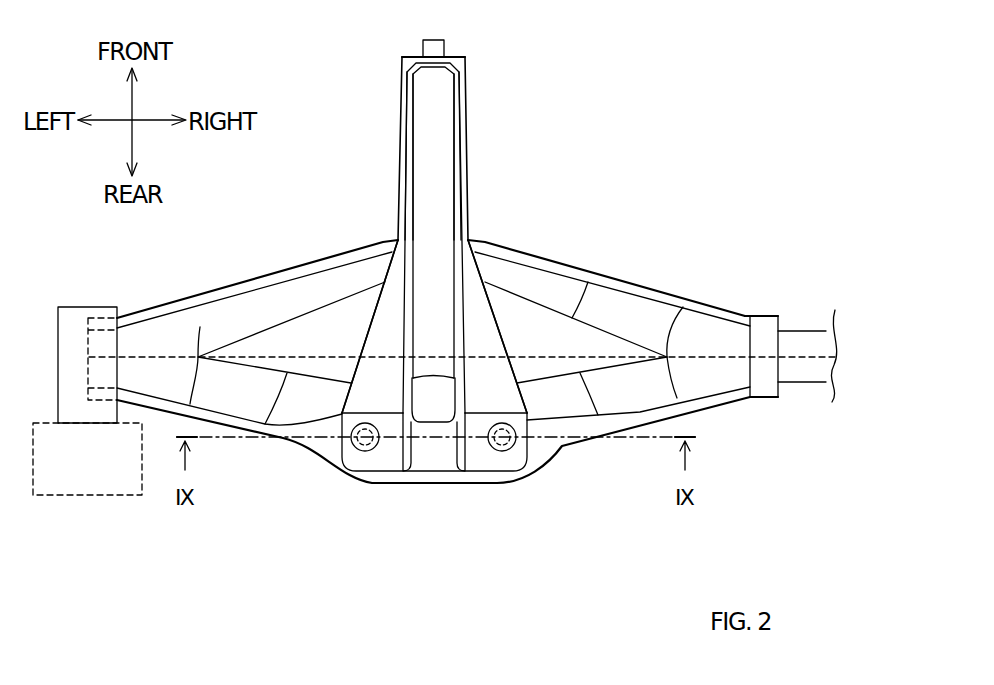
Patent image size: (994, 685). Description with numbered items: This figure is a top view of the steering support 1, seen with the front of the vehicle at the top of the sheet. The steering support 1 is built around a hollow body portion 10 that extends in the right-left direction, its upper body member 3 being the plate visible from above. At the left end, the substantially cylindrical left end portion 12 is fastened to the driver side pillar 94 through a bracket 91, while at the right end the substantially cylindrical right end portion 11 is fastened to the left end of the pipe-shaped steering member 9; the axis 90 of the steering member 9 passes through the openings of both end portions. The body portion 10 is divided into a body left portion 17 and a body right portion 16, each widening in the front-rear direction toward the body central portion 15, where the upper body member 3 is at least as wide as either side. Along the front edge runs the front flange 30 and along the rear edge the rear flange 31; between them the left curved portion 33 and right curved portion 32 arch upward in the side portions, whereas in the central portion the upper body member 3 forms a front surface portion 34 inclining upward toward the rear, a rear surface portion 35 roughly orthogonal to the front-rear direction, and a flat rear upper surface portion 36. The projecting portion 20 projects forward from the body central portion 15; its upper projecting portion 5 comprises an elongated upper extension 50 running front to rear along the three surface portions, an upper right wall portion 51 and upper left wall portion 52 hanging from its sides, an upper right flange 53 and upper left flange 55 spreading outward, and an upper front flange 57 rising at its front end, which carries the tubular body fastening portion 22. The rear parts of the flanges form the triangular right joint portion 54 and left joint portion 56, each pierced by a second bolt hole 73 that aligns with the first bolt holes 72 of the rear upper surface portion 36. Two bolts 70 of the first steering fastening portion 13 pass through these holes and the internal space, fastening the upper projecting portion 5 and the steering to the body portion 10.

The steering support 1 is at (648, 83).
The upper body member 3 is at (257, 243).
The body portion 10 is at (340, 236).
The upper projecting portion 5 is at (407, 235).
The projecting portion 20 is at (392, 114).
The steering member 9 is at (807, 384).
The right end portion 11 is at (765, 340).
The left end portion 12 is at (112, 322).
The first steering fastening portion 13 is at (497, 462).
The body central portion 15 is at (499, 277).
The body right portion 16 is at (600, 310).
The body left portion 17 is at (297, 322).
The body fastening portion 22 is at (431, 49).
The front flange 30 is at (567, 263).
The rear flange 31 is at (690, 410).
The right curved portion 32 is at (662, 335).
The left curved portion 33 is at (200, 327).
The front surface portion 34 is at (576, 281).
The rear surface portion 35 is at (539, 419).
The rear upper surface portion 36 is at (535, 445).
The upper extension 50 is at (445, 264).
The upper right wall portion 51 is at (460, 165).
The upper left wall portion 52 is at (407, 165).
The upper right flange 53 is at (465, 204).
The right joint portion 54 is at (470, 340).
The upper left flange 55 is at (403, 204).
The left joint portion 56 is at (393, 337).
The upper front flange 57 is at (445, 58).
The bolts 70 is at (351, 438).
The first bolt holes 72 is at (419, 486).
The second bolt hole 73 is at (353, 460).
The axis 90 is at (795, 356).
The bracket 91 is at (73, 306).
The driver side pillar 94 is at (98, 497).